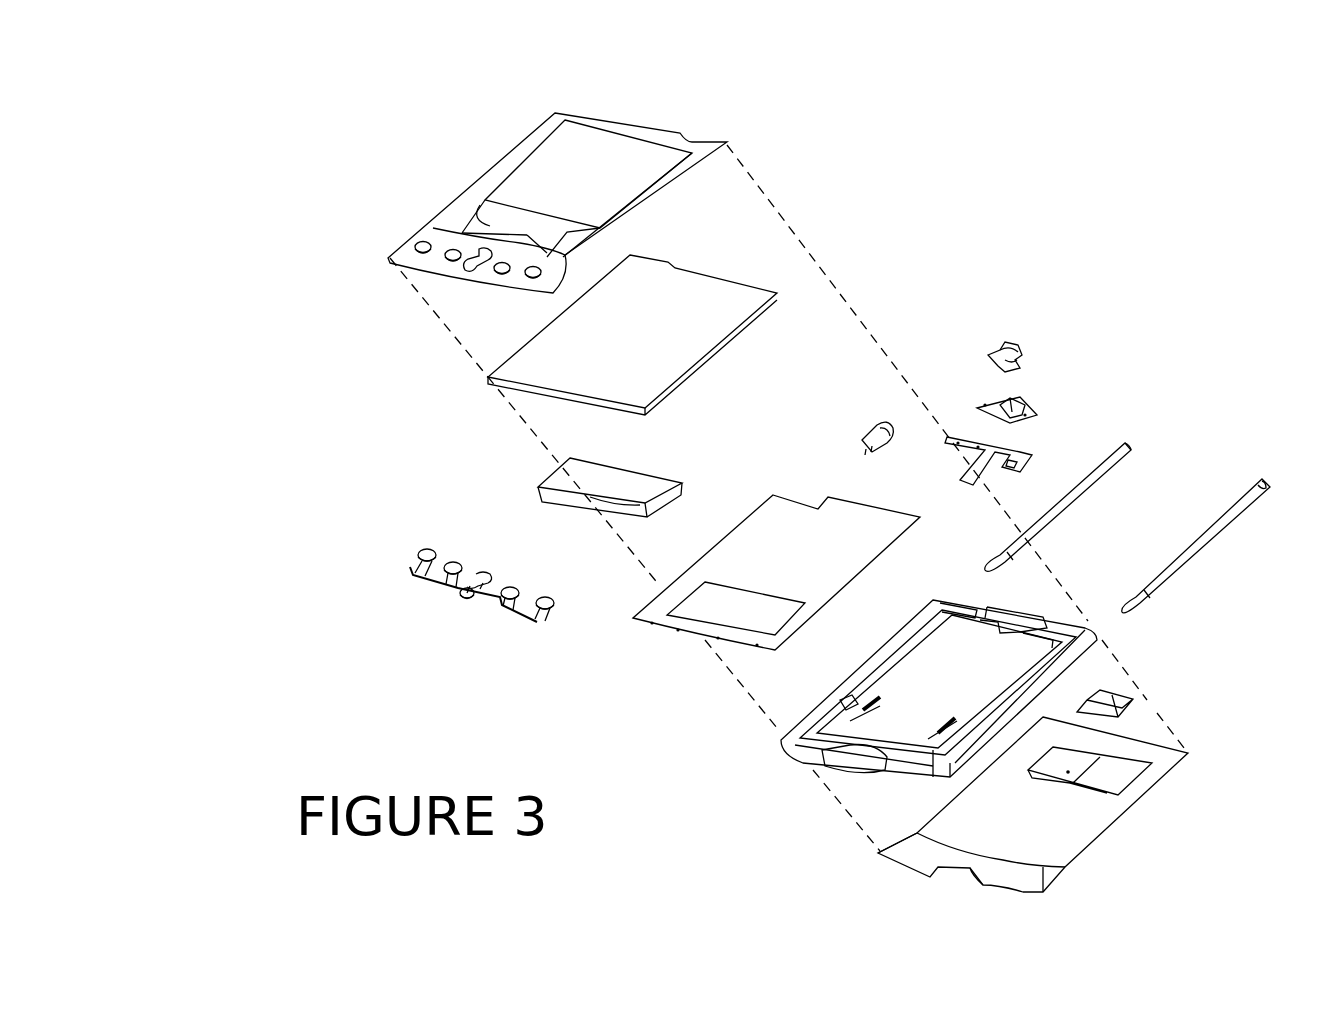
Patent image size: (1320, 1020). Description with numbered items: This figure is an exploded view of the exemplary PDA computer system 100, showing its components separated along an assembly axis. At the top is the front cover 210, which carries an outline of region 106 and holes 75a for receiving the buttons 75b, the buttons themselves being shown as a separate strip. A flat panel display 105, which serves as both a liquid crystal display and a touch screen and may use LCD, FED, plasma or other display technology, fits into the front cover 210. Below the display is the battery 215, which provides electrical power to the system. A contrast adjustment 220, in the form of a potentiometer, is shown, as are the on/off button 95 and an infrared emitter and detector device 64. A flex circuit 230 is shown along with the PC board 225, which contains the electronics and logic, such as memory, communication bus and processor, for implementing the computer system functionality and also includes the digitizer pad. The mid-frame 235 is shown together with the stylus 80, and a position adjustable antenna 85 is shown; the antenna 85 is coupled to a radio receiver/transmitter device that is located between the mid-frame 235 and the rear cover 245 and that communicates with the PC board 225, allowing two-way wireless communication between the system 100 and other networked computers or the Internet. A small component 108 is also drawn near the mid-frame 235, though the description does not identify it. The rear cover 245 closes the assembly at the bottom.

The PDA computer system 100 is at (266, 107).
The front cover 210 is at (729, 144).
The region 106 is at (487, 224).
The holes 75a is at (392, 252).
The flat panel display 105 is at (748, 282).
The battery 215 is at (547, 476).
The buttons 75b is at (418, 559).
The PC board 225 is at (659, 592).
The contrast adjustment 220 is at (871, 424).
The on/off button 95 is at (1006, 339).
The infrared emitter and detector device 64 is at (1031, 410).
The flex circuit 230 is at (1023, 447).
The position adjustable antenna 85 is at (1131, 446).
The stylus 80 is at (1238, 522).
The mid-frame 235 is at (1079, 665).
The cover insert 108 is at (1135, 707).
The rear cover 245 is at (1139, 810).